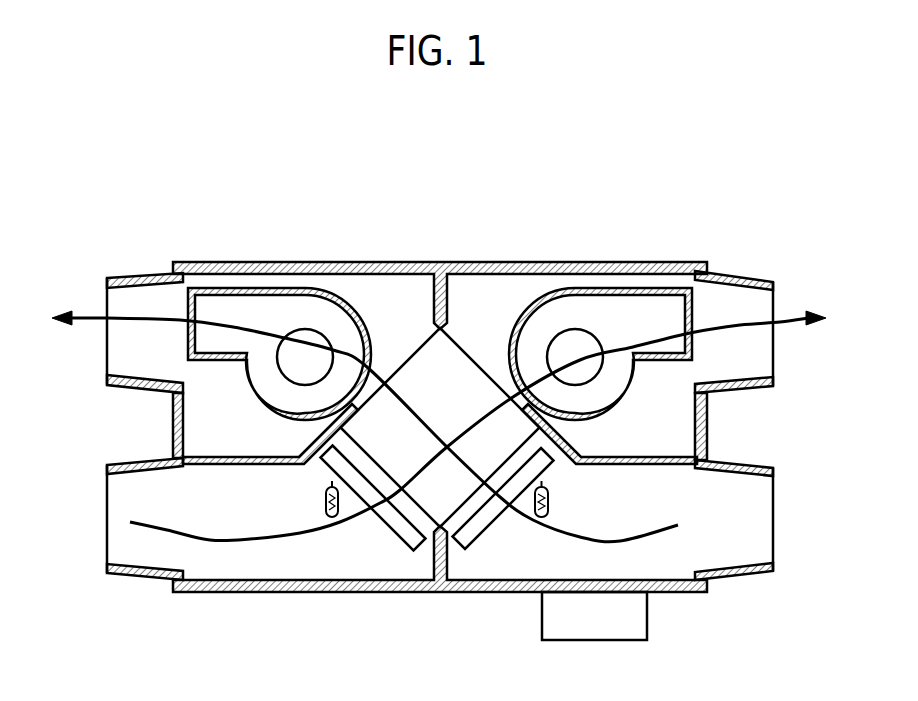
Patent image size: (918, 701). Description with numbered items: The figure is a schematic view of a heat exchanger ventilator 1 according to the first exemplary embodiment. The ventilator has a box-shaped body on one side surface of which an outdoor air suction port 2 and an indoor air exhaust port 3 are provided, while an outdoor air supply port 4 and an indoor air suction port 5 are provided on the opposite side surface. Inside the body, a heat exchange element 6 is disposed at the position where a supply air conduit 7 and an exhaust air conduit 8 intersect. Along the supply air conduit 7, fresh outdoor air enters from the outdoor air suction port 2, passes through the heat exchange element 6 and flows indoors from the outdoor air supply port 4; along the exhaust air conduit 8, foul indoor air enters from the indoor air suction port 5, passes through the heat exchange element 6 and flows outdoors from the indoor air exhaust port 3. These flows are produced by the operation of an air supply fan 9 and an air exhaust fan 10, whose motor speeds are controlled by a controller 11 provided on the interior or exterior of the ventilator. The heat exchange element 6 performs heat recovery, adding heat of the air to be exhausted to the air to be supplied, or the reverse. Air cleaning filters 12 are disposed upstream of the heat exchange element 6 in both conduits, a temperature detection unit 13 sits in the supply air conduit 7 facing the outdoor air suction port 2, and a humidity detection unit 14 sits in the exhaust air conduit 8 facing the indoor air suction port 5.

The heat exchanger ventilator 1 is at (688, 262).
The outdoor air suction port 2 is at (735, 575).
The indoor air exhaust port 3 is at (753, 277).
The outdoor air supply port 4 is at (150, 278).
The indoor air suction port 5 is at (142, 577).
The heat exchange element 6 is at (423, 495).
The supply air conduit 7 is at (88, 327).
The exhaust air conduit 8 is at (788, 328).
The air supply fan 9 is at (322, 290).
The air exhaust fan 10 is at (588, 286).
The controller 11 is at (570, 622).
The air cleaning filter 12 is at (388, 513).
The temperature detection unit 13 is at (548, 507).
The humidity detection unit 14 is at (323, 503).